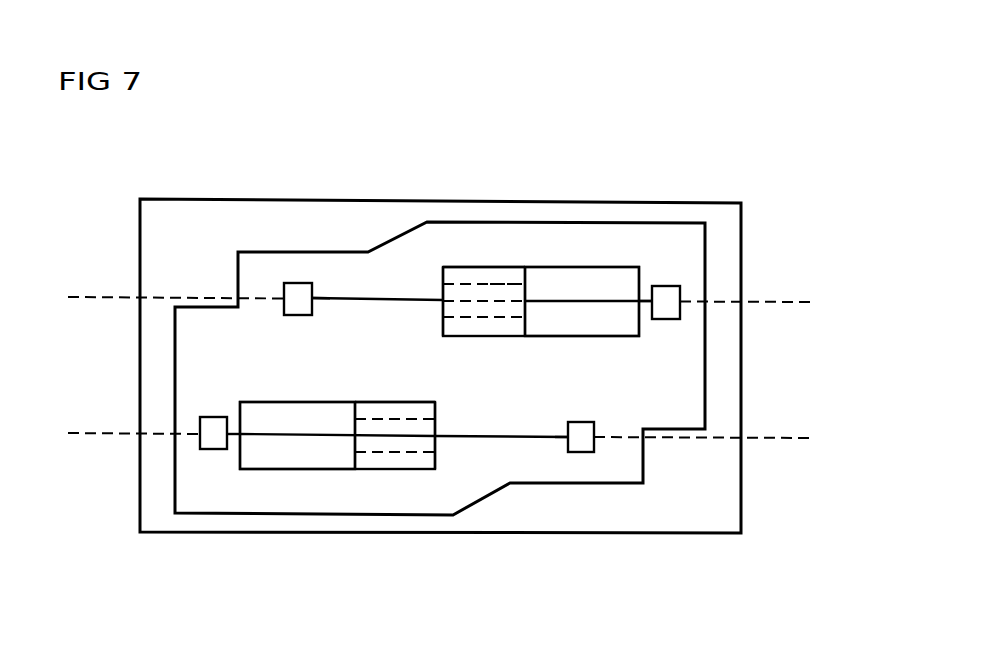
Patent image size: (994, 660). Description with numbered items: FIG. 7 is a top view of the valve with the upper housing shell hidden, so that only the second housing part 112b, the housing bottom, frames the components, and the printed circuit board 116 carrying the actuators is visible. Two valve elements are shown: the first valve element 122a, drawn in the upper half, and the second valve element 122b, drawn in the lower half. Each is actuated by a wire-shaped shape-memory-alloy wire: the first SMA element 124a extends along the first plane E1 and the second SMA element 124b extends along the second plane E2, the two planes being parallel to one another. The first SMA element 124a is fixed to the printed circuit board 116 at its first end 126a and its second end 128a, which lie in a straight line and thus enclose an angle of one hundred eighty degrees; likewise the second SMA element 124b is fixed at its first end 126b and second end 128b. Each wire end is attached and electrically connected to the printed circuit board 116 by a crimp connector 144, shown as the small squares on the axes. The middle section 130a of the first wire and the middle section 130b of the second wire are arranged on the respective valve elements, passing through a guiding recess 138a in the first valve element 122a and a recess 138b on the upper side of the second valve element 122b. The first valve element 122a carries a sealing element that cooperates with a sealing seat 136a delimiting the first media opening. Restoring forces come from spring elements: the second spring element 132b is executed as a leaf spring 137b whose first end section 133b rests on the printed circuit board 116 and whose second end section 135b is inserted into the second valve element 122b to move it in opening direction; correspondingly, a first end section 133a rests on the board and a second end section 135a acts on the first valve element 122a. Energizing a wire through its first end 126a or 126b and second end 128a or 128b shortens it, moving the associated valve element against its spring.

The second housing part 112b is at (150, 493).
The printed circuit board 116 is at (180, 362).
The first plane E1 is at (773, 302).
The second plane E2 is at (780, 438).
The crimp connector 144 is at (290, 283).
The first wire-shaped SMA element 124a is at (330, 300).
The second wire-shaped SMA element 124b is at (503, 437).
The first end of the first SMA element 126a is at (322, 297).
The first end of the second SMA element 126b is at (228, 437).
The second end of the first SMA element 128a is at (643, 300).
The second end of the second SMA element 128b is at (565, 445).
The first end section of the first spring element 133a is at (617, 327).
The first end section of the second spring element 133b is at (287, 458).
The second spring element 132b is at (460, 331).
The leaf spring 137b is at (581, 262).
The first valve element 122a is at (495, 301).
The second valve element 122b is at (386, 483).
The sealing seat 136a is at (465, 284).
The recess 138a is at (508, 284).
The recess 138b is at (393, 428).
The middle section of the first SMA element 130a is at (502, 256).
The middle section of the second SMA element 130b is at (410, 435).
The second end section of a spring element 135a is at (434, 255).
The second end section of the second spring element 135b is at (440, 484).